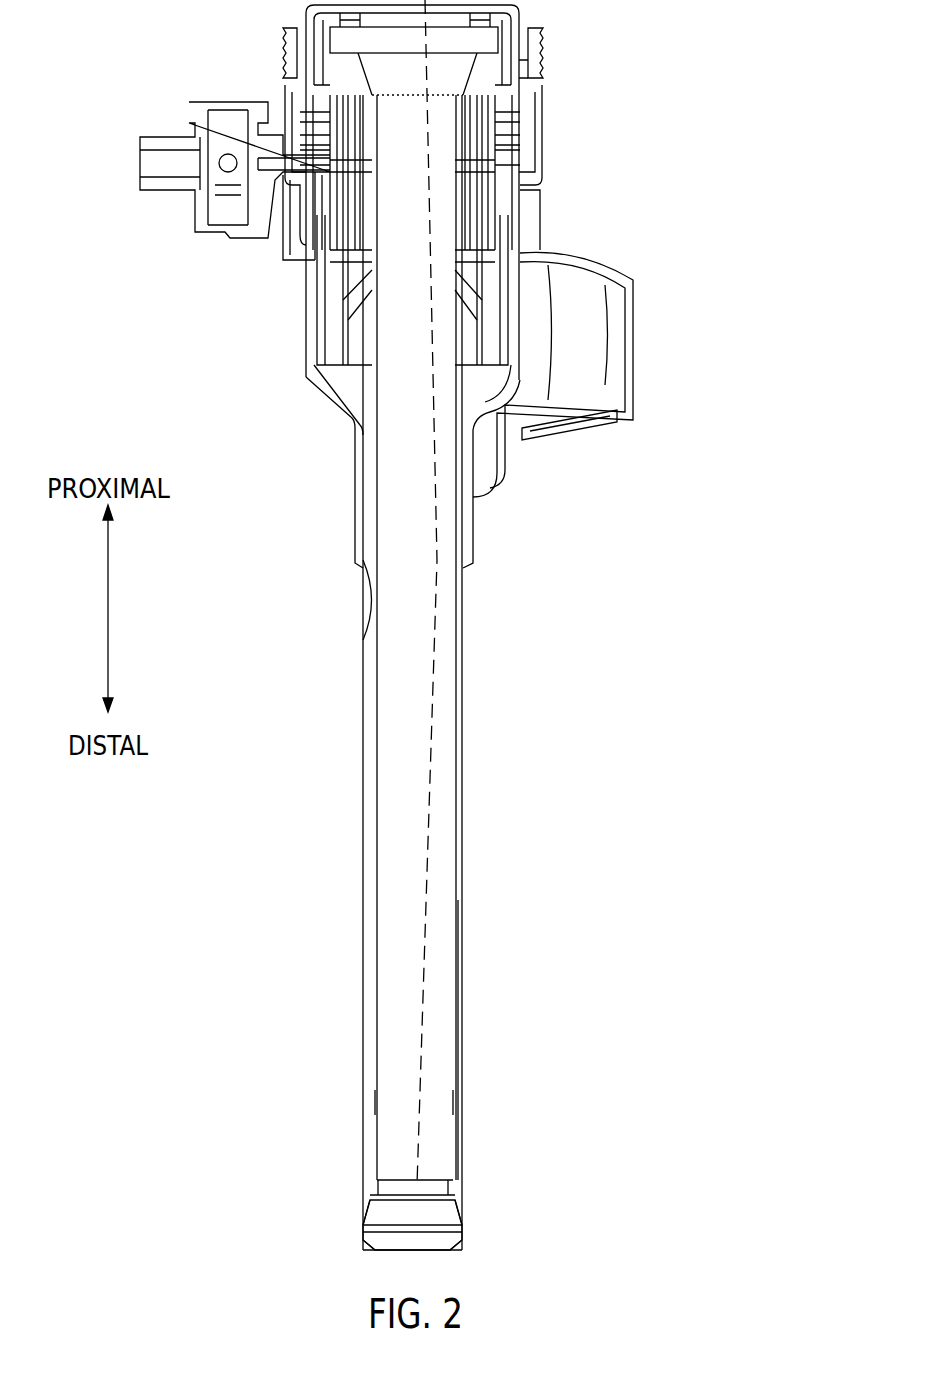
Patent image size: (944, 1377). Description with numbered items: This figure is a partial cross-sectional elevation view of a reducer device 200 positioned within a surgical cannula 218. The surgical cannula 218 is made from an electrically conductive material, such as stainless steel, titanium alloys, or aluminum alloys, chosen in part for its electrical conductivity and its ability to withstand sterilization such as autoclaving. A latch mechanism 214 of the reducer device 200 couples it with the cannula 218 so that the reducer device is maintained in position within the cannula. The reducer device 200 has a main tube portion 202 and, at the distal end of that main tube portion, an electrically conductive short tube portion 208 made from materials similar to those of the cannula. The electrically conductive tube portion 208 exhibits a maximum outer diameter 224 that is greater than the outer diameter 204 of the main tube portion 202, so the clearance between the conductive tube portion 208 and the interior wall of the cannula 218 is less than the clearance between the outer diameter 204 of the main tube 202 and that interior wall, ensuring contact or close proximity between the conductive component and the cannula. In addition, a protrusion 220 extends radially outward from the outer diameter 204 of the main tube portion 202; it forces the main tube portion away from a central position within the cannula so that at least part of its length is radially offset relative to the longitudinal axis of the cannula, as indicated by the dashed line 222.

The surgical cannula 218 is at (678, 103).
The latch mechanism 214 is at (520, 72).
The protrusion 220 is at (372, 583).
The reducer device 200 is at (388, 858).
The dashed line 222 is at (434, 910).
The main tube portion 202 is at (446, 1058).
The outer diameter 204 is at (370, 1102).
The electrically conductive short tube portion 208 is at (450, 1192).
The maximum outer diameter 224 is at (361, 1232).